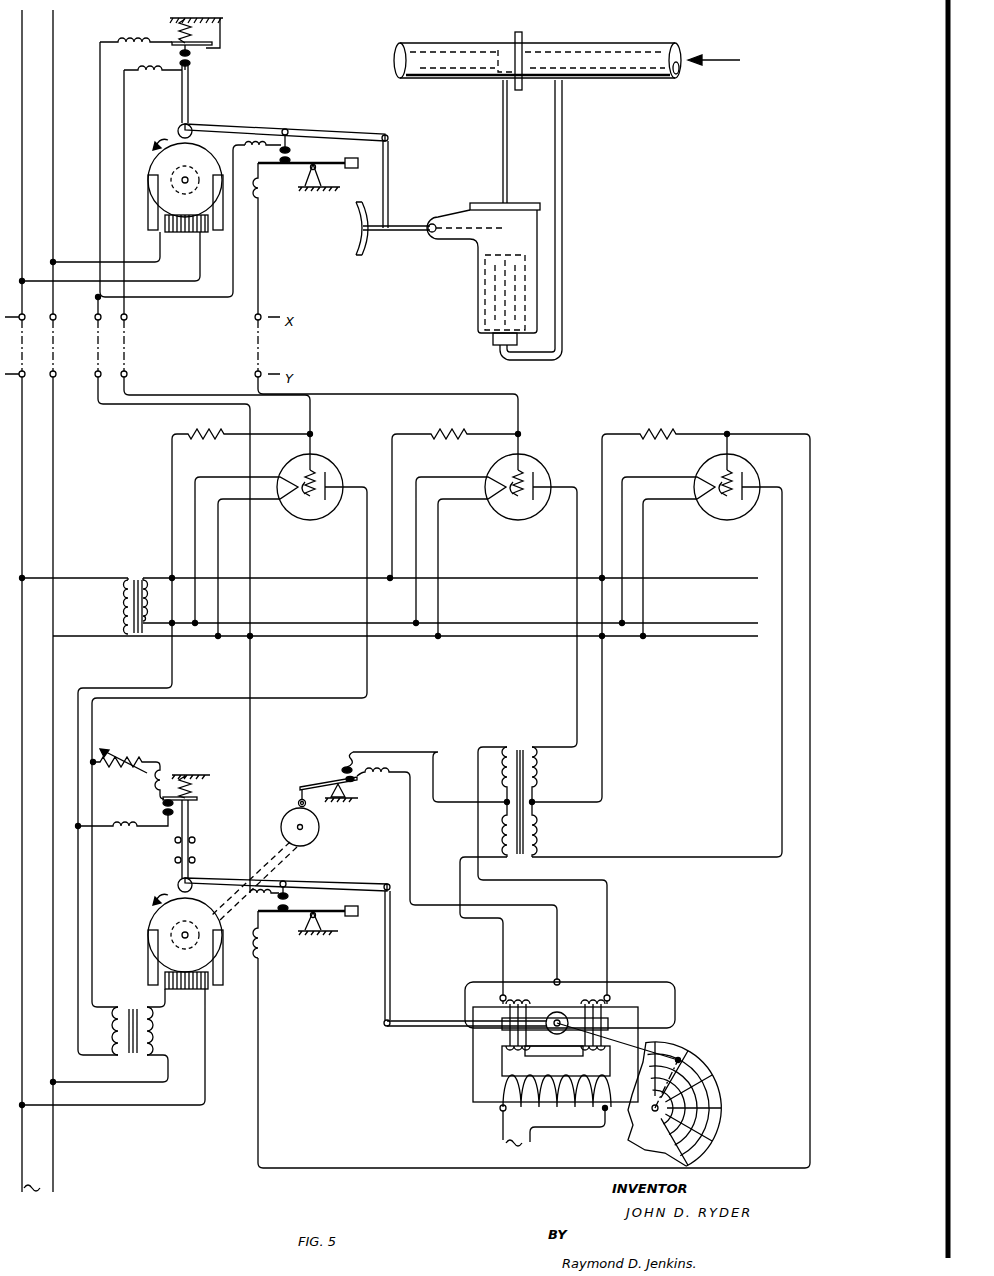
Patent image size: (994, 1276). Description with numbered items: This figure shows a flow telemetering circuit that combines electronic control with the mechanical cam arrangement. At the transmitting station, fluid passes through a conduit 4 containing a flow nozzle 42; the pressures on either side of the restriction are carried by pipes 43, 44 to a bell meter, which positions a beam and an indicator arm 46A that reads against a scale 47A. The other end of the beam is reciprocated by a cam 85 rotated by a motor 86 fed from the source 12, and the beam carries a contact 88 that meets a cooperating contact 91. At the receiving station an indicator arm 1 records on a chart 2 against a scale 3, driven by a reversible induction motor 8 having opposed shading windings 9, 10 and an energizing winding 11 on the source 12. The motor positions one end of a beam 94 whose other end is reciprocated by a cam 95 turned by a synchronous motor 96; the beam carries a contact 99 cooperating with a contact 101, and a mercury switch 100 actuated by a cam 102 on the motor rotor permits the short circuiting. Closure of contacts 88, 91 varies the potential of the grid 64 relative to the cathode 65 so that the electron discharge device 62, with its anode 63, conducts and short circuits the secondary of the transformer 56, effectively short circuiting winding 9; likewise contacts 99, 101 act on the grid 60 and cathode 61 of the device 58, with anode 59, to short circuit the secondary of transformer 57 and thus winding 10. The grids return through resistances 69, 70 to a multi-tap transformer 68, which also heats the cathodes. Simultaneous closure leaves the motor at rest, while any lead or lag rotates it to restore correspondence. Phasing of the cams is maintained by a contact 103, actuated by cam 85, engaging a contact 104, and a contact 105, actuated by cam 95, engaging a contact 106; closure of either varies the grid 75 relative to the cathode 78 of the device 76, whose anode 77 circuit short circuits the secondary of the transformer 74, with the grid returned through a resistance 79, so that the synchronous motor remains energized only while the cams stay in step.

The indicator arm 1 is at (622, 1046).
The time rotatable chart 2 is at (717, 1072).
The scale 3 is at (696, 1058).
The conduit 4 is at (418, 39).
The reversible induction motor 8 is at (640, 1003).
The shading pole winding 9 is at (606, 1014).
The shading pole winding 10 is at (505, 1037).
The energizing winding 11 is at (538, 1108).
The source 12 is at (54, 950).
The flow nozzle 42 is at (502, 48).
The pipe 43 is at (562, 142).
The pipe 44 is at (507, 135).
The indicator arm 46A is at (408, 233).
The scale 47A is at (350, 232).
The transformer 56 is at (480, 861).
The transformer 57 is at (498, 898).
The electron discharge device 58 is at (748, 454).
The anode 59 is at (748, 498).
The grid 60 is at (720, 494).
The cathode 61 is at (689, 501).
The electron discharge device 62 is at (540, 454).
The anode 63 is at (540, 494).
The grid 64 is at (513, 494).
The cathode 65 is at (484, 501).
The multi-tap transformer 68 is at (390, 598).
The resistance 69 is at (655, 429).
The resistance 70 is at (441, 429).
The transformer 74 is at (112, 830).
The grid 75 is at (308, 494).
The electron discharge device 76 is at (332, 450).
The anode 77 is at (330, 500).
The cathode 78 is at (278, 501).
The resistance 79 is at (222, 442).
The cam 85 is at (158, 165).
The motor 86 is at (162, 232).
The contact 88 is at (292, 152).
The contact 91 is at (274, 160).
The beam 94 is at (322, 884).
The cam 95 is at (158, 920).
The synchronous motor 96 is at (220, 978).
The contact 99 is at (292, 899).
The mercury switch 100 is at (336, 769).
The contact 101 is at (278, 910).
The cam 102 is at (320, 830).
The contact 103 is at (194, 62).
The contact 104 is at (172, 46).
The contact 105 is at (160, 803).
The contact 106 is at (166, 815).